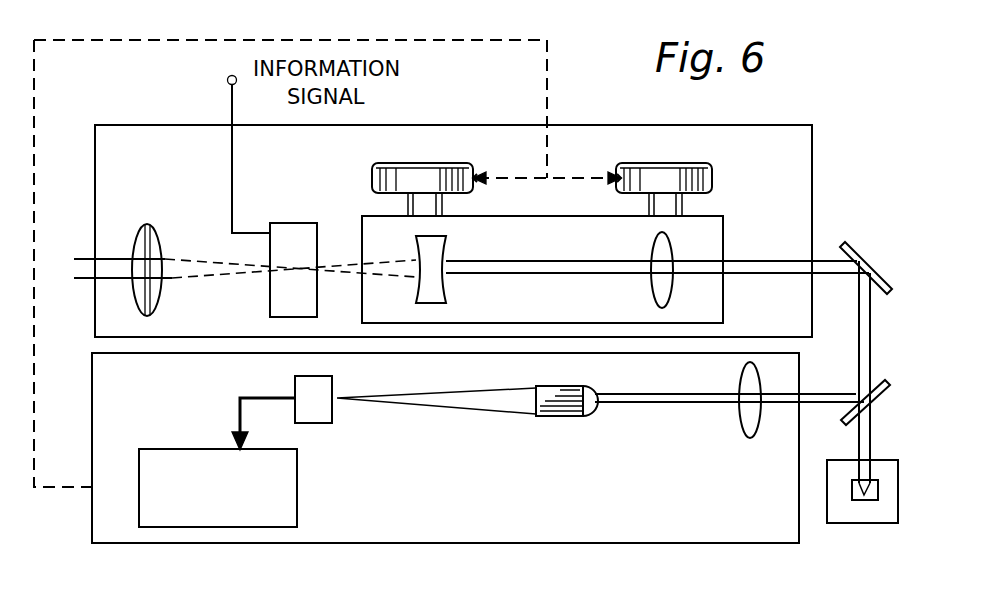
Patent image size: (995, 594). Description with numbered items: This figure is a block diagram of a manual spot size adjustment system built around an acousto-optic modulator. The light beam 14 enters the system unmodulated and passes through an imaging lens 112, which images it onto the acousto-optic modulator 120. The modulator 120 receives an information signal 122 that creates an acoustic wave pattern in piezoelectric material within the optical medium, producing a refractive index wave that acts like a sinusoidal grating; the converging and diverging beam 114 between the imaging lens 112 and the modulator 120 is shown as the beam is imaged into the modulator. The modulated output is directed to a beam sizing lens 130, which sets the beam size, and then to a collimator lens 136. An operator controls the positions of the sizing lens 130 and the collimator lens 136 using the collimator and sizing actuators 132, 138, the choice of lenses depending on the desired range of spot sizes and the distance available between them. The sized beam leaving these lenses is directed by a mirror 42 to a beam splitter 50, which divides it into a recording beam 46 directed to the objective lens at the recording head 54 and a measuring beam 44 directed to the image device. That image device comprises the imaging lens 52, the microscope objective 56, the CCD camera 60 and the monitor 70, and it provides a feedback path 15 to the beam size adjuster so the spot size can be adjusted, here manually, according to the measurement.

The feedback path 15 is at (196, 40).
The light beam 14 is at (106, 262).
The information signal 122 is at (227, 80).
The imaging lens 112 is at (152, 230).
The light beam 114 is at (190, 282).
The acousto-optic modulator 120 is at (280, 222).
The beam sizing lens 130 is at (460, 290).
The collimator and sizing actuator 132 is at (394, 163).
The collimator lens 136 is at (650, 252).
The collimator and sizing actuator 138 is at (712, 172).
The mirror 42 is at (882, 212).
The measuring beam 44 is at (836, 396).
The recording beam 46 is at (856, 442).
The beam splitter 50 is at (872, 388).
The imaging lens 52 is at (752, 438).
The recording head 54 is at (868, 500).
The microscope objective 56 is at (548, 418).
The CCD camera 60 is at (294, 382).
The monitor 70 is at (297, 490).